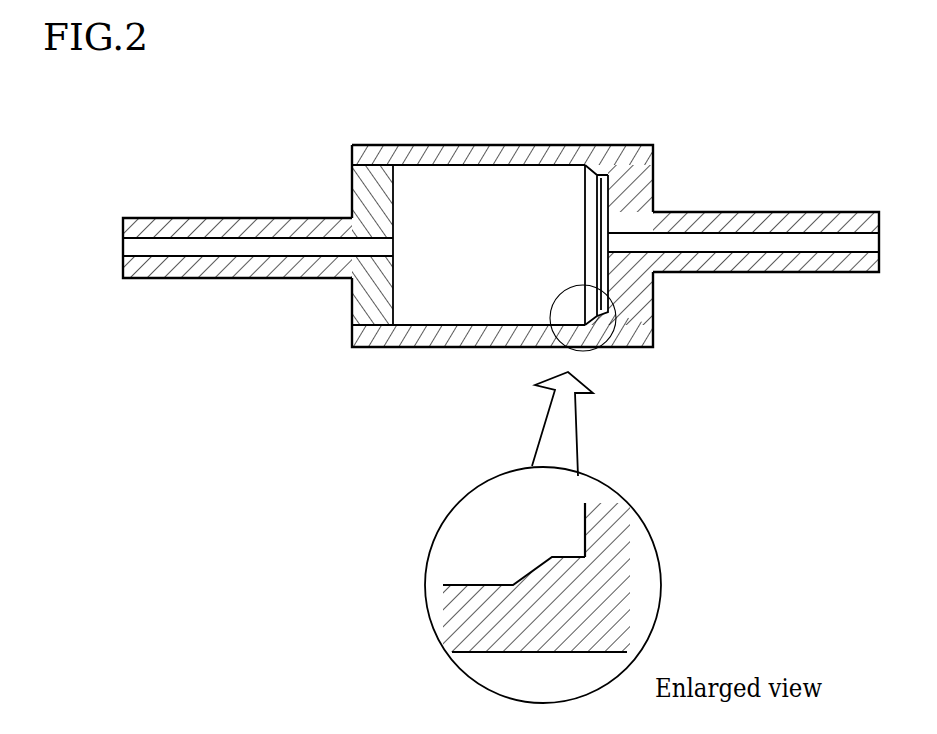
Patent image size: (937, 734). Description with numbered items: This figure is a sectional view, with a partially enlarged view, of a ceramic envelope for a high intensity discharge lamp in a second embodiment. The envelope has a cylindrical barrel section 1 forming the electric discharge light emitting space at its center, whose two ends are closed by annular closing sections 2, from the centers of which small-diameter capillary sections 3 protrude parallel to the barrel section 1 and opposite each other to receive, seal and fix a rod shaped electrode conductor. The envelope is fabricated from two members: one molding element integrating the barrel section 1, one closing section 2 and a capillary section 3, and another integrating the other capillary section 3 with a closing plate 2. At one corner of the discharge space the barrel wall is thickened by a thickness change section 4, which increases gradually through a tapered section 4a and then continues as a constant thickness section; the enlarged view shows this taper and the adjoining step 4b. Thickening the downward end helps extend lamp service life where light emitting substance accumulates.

The barrel section 1 is at (480, 145).
The closing section 2 is at (352, 202).
The capillary section 3 is at (200, 218).
The thickness change section 4 is at (592, 175).
The tapered section 4a is at (532, 570).
The step wall 4b is at (575, 547).